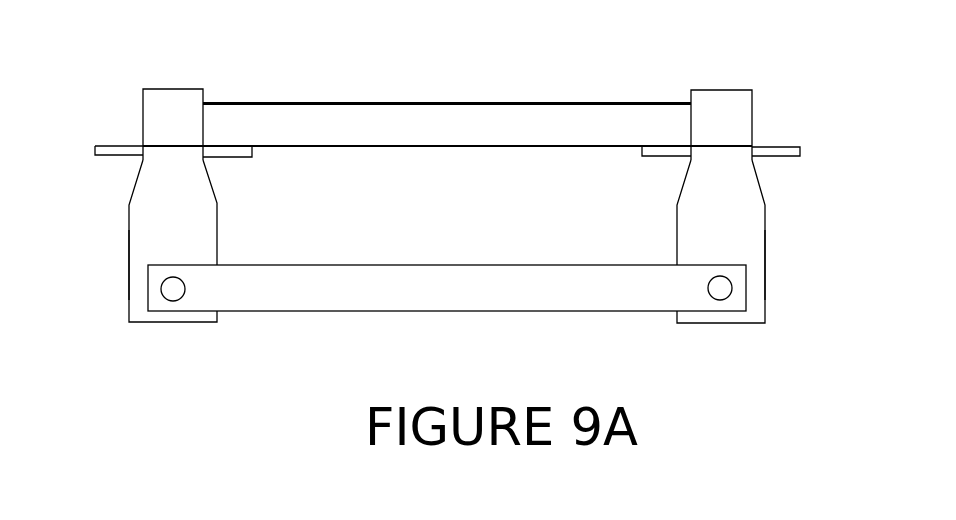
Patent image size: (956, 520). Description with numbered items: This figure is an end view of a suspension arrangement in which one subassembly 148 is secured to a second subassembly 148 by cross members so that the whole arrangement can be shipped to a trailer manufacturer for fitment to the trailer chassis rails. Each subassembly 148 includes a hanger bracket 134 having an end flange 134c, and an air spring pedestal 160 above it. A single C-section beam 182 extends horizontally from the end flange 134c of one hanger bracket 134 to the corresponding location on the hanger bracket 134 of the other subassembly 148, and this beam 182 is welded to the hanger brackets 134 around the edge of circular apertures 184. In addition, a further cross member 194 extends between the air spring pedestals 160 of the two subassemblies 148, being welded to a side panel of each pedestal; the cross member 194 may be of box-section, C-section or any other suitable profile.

The subassembly 148 is at (176, 86).
The hanger bracket 134 is at (188, 324).
The end flange 134c is at (128, 246).
The cross member 194 is at (393, 102).
The air spring pedestal 160 is at (236, 152).
The C-section beam 182 is at (307, 280).
The circular aperture 184 is at (165, 295).